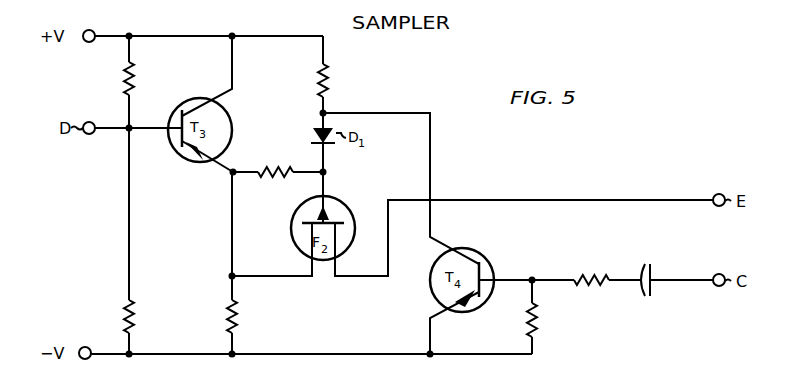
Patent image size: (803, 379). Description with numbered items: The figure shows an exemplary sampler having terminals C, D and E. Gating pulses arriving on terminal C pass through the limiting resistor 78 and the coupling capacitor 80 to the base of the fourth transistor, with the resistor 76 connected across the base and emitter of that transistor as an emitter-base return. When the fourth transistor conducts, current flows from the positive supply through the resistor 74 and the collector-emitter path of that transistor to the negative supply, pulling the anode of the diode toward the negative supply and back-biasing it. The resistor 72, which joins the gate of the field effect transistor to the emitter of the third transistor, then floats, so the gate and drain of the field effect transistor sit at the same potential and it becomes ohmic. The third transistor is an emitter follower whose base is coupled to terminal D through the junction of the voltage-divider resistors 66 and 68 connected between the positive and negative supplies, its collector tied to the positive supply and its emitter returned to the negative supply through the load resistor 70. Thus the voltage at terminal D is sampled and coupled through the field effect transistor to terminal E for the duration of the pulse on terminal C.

The junction resistor 66 is at (134, 80).
The junction resistor 68 is at (134, 318).
The load resistor 70 is at (237, 318).
The resistor 72 is at (276, 178).
The resistor 74 is at (328, 82).
The resistor 76 is at (537, 322).
The limiting resistor 78 is at (592, 274).
The coupling capacitor 80 is at (653, 270).